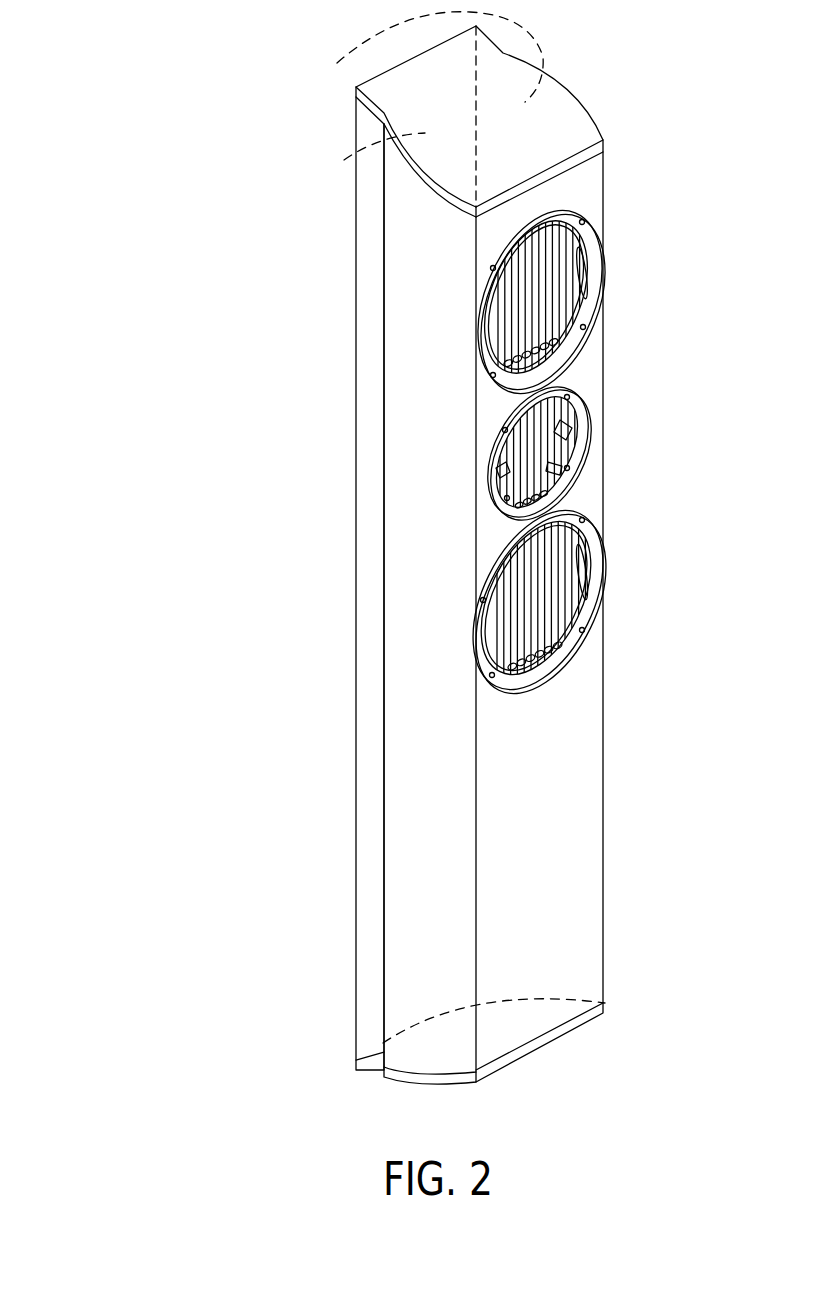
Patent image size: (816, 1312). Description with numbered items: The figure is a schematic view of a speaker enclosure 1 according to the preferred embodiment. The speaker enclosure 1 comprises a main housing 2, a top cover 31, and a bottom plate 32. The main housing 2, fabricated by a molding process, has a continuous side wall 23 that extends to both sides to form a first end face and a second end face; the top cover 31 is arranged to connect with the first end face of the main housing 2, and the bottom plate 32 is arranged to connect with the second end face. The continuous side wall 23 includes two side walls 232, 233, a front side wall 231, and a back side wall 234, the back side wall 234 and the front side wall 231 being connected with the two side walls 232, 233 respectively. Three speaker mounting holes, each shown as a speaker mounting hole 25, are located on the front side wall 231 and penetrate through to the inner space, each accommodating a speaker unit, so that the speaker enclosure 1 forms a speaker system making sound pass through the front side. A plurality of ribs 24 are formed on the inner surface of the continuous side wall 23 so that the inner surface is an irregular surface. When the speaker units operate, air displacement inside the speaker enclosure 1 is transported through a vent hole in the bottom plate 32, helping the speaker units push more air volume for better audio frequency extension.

The speaker enclosure 1 is at (157, 52).
The main housing 2 is at (605, 459).
The continuous side wall 23 is at (258, 52).
The front side wall 231 is at (488, 520).
The side wall 232 is at (337, 63).
The side wall 233 is at (403, 298).
The back side wall 234 is at (338, 161).
The ribs 24 is at (560, 238).
The speaker mounting hole 25 is at (583, 590).
The top cover 31 is at (570, 100).
The bottom plate 32 is at (575, 1032).